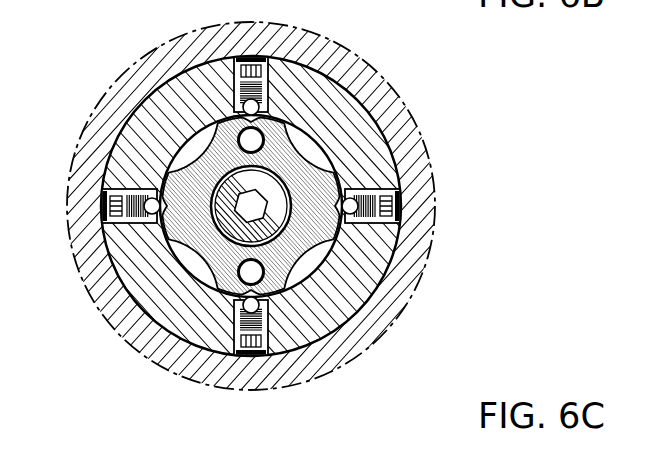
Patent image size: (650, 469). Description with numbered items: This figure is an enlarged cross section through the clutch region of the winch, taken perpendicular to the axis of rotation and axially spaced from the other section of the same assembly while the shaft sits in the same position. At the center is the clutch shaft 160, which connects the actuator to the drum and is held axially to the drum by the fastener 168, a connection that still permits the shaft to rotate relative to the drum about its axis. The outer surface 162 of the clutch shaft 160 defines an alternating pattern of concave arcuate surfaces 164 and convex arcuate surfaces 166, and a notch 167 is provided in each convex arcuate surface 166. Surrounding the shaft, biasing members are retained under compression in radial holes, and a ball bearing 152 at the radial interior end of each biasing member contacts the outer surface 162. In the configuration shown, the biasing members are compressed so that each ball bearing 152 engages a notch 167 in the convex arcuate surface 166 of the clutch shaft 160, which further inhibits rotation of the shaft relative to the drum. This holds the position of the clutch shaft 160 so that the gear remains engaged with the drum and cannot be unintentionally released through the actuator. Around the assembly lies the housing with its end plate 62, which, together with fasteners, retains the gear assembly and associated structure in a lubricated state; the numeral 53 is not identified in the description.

The housing body 53 is at (170, 66).
The end plate 62 is at (408, 128).
The ball bearing 152 is at (412, 197).
The clutch shaft 160 is at (306, 168).
The outer surface 162 is at (401, 100).
The concave arcuate surface 164 is at (143, 100).
The convex arcuate surface 166 is at (362, 213).
The notch 167 is at (250, 136).
The fastener 168 is at (268, 222).